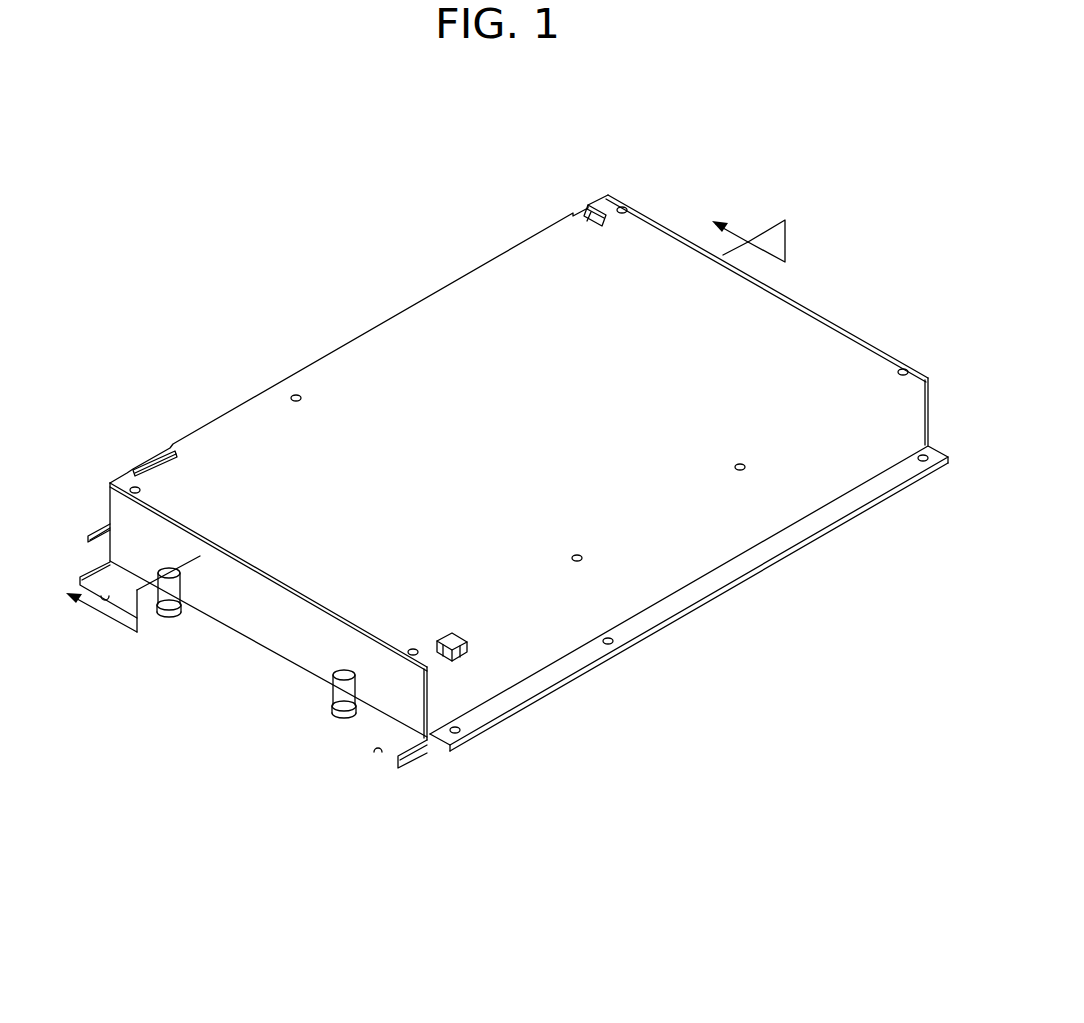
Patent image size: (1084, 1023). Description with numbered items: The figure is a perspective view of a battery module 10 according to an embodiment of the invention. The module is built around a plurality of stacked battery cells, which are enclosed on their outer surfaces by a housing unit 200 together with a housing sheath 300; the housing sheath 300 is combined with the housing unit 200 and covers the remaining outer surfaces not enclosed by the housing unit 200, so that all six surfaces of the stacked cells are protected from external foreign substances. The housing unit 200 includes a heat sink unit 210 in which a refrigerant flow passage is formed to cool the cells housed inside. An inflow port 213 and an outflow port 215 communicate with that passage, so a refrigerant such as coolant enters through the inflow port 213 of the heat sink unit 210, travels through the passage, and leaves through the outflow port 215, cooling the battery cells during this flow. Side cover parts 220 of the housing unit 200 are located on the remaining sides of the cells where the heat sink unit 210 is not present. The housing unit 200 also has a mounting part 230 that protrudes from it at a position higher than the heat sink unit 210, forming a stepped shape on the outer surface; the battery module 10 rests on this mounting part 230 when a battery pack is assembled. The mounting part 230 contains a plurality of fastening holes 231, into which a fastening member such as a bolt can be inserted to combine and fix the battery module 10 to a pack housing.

The battery module 10 is at (88, 149).
The housing unit 200 is at (417, 827).
The heat sink unit 210 is at (146, 635).
The inflow port 213 is at (160, 622).
The outflow port 215 is at (332, 720).
The side cover part 220 is at (253, 628).
The mounting part 230 is at (512, 698).
The fastening hole 231 is at (612, 650).
The housing sheath 300 is at (823, 340).